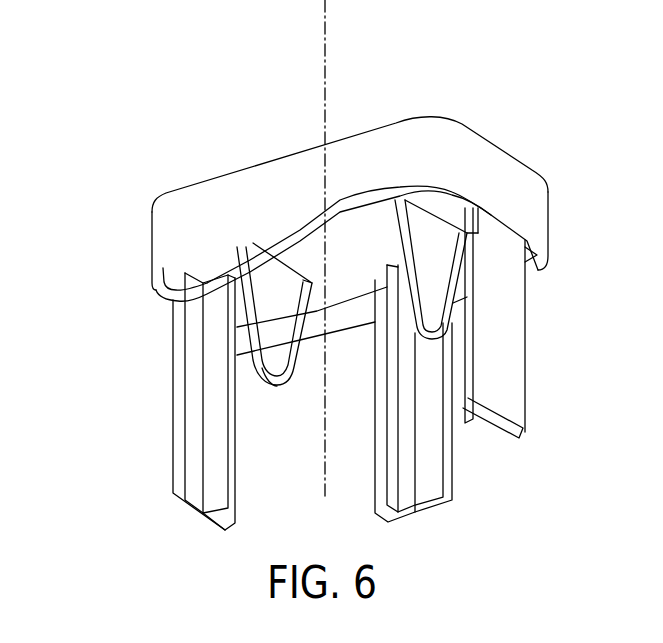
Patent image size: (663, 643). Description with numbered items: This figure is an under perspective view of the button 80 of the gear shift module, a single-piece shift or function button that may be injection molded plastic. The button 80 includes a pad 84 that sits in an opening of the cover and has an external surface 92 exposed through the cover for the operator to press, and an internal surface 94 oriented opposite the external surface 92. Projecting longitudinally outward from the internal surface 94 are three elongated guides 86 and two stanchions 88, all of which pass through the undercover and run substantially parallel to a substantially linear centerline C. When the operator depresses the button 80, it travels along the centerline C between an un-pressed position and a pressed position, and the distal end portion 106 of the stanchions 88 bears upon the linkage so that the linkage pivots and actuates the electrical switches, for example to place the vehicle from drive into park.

The button 80 is at (103, 148).
The pad 84 is at (548, 221).
The elongated guide 86 is at (173, 437).
The stanchion 88 is at (437, 331).
The external surface 92 is at (210, 173).
The internal surface 94 is at (154, 296).
The distal end portion 106 is at (289, 380).
The centerline C is at (327, 27).